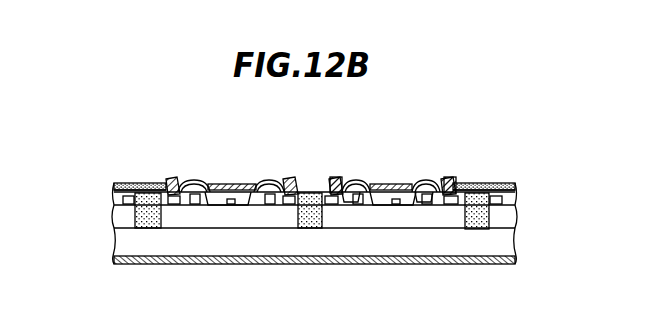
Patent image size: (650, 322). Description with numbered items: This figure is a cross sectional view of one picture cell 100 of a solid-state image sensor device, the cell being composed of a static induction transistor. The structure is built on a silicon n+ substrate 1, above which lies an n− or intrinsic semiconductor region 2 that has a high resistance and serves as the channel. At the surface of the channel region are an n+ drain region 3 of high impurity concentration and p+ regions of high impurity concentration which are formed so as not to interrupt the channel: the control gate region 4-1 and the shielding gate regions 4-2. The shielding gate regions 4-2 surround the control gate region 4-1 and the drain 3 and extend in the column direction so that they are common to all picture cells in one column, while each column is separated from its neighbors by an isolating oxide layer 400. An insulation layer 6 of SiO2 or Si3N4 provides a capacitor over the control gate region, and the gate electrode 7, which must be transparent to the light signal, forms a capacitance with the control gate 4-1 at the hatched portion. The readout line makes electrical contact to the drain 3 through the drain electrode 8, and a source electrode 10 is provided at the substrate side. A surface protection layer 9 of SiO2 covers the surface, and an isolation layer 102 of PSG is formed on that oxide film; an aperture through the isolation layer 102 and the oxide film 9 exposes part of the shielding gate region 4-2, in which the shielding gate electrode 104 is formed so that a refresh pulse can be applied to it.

The silicon n+ substrate 1 is at (117, 240).
The n− semiconductor region 2 is at (116, 215).
The n+ drain region 3 is at (360, 203).
The control gate region 4-1 is at (394, 205).
The shielding gate region 4-2 is at (350, 202).
The insulation layer 6 is at (377, 188).
The gate electrode 7 is at (398, 184).
The drain electrode 8 is at (356, 188).
The surface protection layer 9 is at (116, 196).
The source electrode 10 is at (118, 263).
The picture cell 100 is at (218, 268).
The isolation layer 102 is at (113, 185).
The shielding gate electrode 104 is at (335, 178).
The isolating oxide layer 400 is at (148, 228).